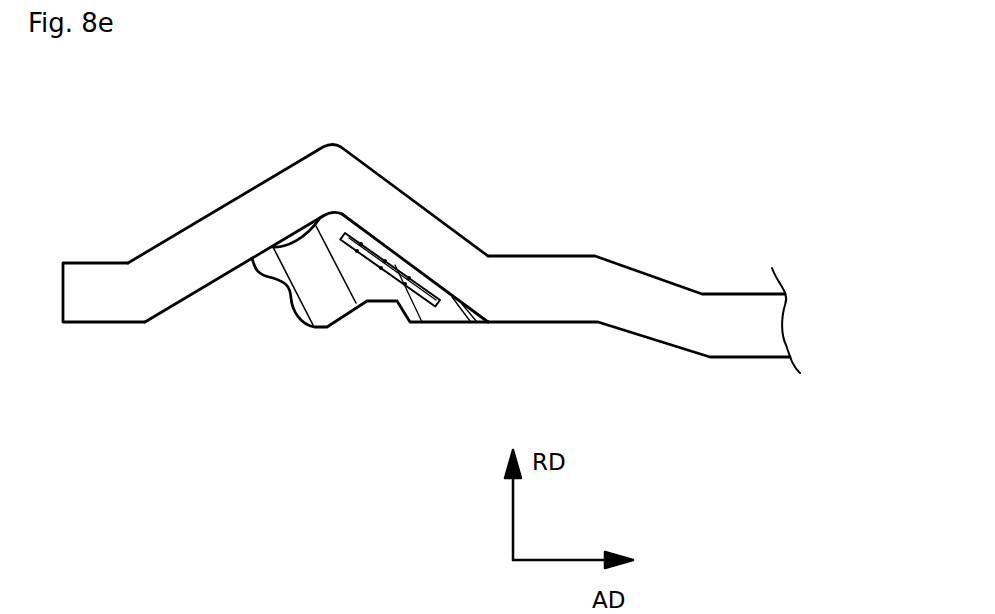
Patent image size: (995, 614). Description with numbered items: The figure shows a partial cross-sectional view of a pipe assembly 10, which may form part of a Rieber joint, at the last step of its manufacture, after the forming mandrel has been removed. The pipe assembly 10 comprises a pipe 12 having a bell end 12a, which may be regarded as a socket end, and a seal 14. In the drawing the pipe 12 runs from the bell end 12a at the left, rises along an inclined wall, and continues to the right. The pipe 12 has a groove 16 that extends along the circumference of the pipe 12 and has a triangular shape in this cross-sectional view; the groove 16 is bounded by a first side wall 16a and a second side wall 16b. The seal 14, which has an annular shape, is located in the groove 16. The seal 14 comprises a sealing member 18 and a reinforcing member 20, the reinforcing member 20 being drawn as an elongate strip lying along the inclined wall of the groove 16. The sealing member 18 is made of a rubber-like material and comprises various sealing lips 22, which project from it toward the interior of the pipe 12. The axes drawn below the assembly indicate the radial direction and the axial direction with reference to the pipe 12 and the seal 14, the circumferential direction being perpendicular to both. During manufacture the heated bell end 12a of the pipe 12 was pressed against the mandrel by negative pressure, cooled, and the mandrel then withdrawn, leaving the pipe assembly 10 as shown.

The pipe assembly 10 is at (428, 252).
The pipe 12 is at (547, 285).
The bell end 12a is at (115, 292).
The seal 14 is at (341, 252).
The groove 16 is at (337, 252).
The first side wall 16a is at (198, 293).
The second side wall 16b is at (450, 293).
The sealing member 18 is at (340, 227).
The reinforcing member 20 is at (395, 258).
The sealing lips 22 is at (313, 323).